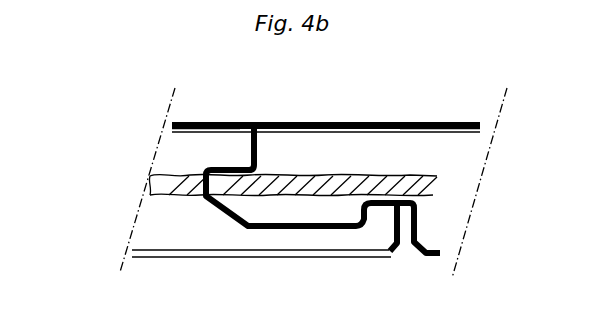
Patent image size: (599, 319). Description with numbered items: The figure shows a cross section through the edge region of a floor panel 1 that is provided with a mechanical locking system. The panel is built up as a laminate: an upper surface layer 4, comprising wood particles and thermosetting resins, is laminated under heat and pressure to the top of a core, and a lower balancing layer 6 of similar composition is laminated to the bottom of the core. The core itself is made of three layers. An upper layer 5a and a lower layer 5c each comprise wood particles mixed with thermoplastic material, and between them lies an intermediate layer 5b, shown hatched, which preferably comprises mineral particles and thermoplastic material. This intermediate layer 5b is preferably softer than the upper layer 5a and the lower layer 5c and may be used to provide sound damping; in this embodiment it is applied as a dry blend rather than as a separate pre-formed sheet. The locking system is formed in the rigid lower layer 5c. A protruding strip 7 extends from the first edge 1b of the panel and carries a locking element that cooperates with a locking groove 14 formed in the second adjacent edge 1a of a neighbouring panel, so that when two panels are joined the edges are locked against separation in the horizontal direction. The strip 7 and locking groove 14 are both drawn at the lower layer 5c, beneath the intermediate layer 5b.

The floor panel 1 is at (323, 102).
The second edge 1a is at (201, 106).
The first edge 1b is at (416, 106).
The upper surface layer 4 is at (171, 122).
The upper layer 5a is at (172, 160).
The intermediate layer 5b is at (155, 183).
The lower layer 5c is at (143, 222).
The lower balancing layer 6 is at (287, 256).
The protruding strip 7 is at (342, 243).
The locking groove 14 is at (407, 248).